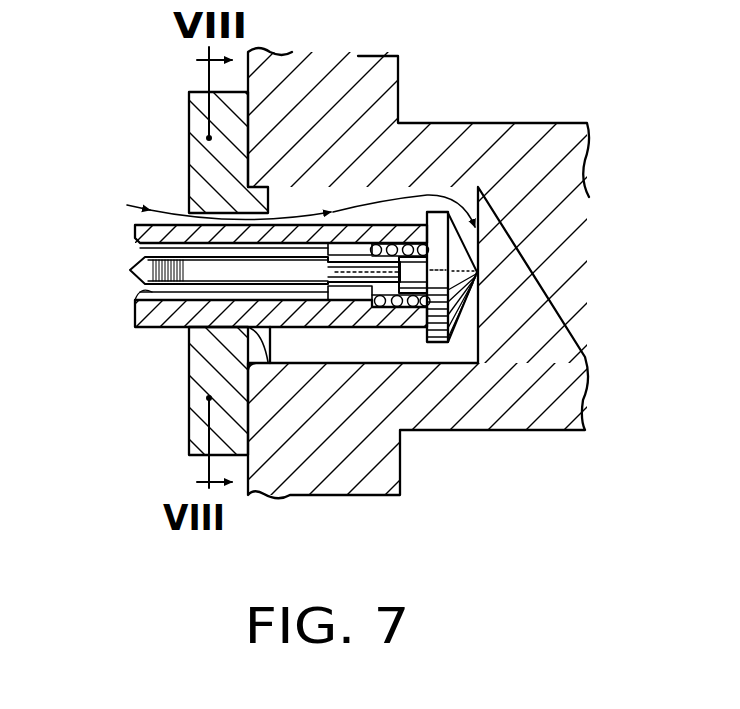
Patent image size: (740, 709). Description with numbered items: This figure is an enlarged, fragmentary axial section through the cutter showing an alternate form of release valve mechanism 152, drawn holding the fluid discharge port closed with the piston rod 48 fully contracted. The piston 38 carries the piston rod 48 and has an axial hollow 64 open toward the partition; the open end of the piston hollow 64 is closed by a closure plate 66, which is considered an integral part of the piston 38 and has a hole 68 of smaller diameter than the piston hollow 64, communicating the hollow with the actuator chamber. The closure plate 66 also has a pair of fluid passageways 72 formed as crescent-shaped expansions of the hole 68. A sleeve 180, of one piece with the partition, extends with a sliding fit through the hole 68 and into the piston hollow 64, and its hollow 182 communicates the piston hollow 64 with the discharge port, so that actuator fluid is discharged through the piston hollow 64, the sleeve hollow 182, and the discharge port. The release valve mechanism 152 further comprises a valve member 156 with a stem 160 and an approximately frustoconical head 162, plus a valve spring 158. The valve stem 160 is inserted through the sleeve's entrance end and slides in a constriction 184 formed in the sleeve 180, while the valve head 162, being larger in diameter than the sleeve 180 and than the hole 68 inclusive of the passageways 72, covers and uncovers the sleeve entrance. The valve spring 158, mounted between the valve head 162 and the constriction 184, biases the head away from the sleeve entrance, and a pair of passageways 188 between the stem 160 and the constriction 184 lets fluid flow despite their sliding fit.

The piston 38 is at (368, 57).
The piston rod 48 is at (567, 135).
The piston hollow 64 is at (432, 353).
The closure plate 66 is at (195, 118).
The hole 68 is at (274, 364).
The fluid passageways 72 is at (190, 337).
The release valve mechanism 152 is at (483, 213).
The valve member 156 is at (465, 329).
The valve spring 158 is at (394, 310).
The valve stem 160 is at (137, 252).
The valve head 162 is at (452, 281).
The sleeve 180 is at (172, 328).
The sleeve hollow 182 is at (150, 292).
The sleeve constriction 184 is at (287, 344).
The passageways 188 is at (355, 293).